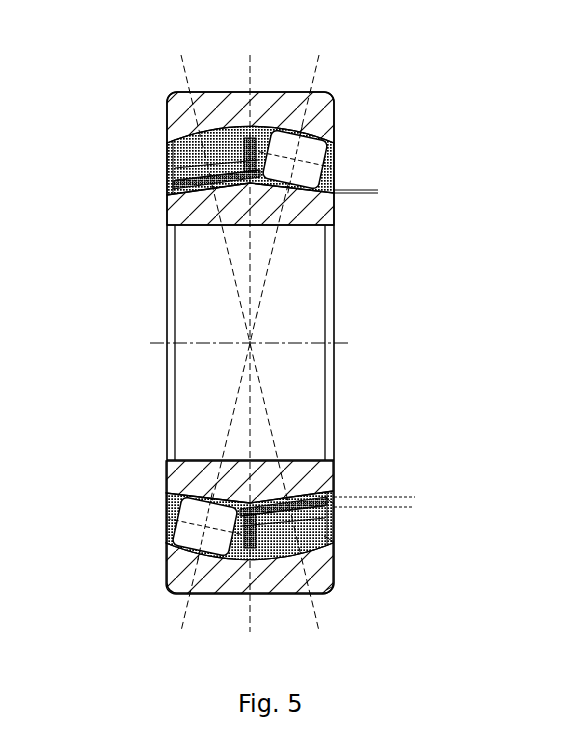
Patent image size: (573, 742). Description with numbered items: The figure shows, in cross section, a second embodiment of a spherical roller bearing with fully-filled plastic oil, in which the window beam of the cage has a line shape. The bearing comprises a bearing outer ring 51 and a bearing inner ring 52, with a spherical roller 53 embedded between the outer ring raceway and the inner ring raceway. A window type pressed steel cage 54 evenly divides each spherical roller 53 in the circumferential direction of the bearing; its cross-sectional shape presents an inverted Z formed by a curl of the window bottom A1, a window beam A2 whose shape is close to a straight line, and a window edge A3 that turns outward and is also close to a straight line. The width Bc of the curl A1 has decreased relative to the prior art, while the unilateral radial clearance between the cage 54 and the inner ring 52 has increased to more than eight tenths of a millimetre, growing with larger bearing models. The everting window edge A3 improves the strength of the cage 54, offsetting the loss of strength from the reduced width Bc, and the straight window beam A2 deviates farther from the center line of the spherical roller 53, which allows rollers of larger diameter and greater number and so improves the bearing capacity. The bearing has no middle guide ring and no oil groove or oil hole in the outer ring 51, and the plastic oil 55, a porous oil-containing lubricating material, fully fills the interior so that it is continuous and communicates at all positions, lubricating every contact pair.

The bearing outer ring 51 is at (187, 82).
The bearing inner ring 52 is at (186, 459).
The spherical roller 53 is at (144, 544).
The window type pressed steel cage 54 is at (187, 147).
The plastic oil 55 is at (150, 206).
The curl of the window bottom of the cage A1 is at (406, 529).
The window beam of the cage A2 is at (409, 577).
The window edge of the cage A3 is at (411, 627).
The width of the curl Bc is at (395, 472).